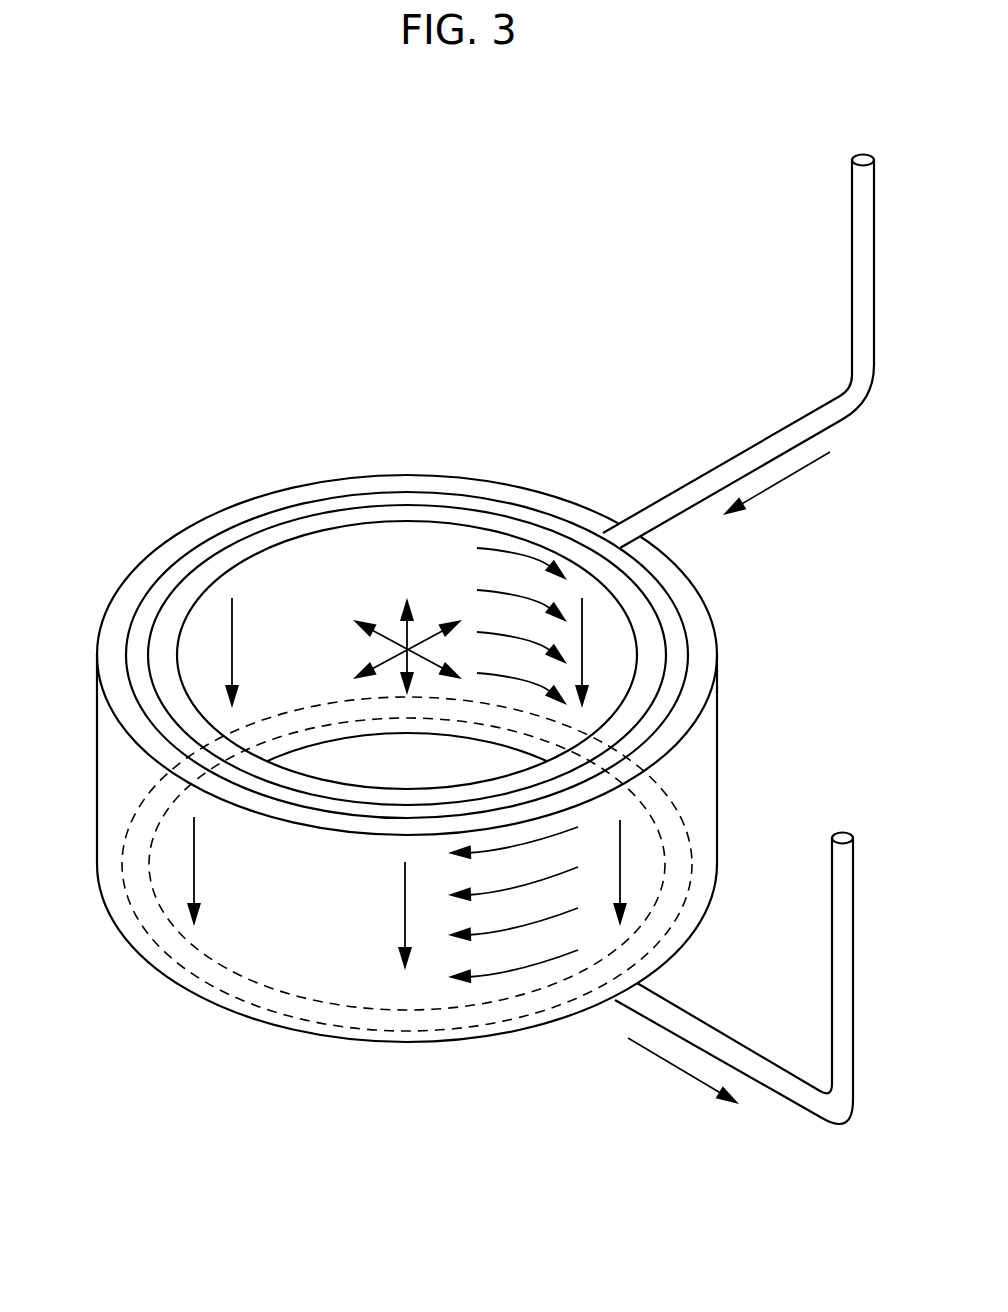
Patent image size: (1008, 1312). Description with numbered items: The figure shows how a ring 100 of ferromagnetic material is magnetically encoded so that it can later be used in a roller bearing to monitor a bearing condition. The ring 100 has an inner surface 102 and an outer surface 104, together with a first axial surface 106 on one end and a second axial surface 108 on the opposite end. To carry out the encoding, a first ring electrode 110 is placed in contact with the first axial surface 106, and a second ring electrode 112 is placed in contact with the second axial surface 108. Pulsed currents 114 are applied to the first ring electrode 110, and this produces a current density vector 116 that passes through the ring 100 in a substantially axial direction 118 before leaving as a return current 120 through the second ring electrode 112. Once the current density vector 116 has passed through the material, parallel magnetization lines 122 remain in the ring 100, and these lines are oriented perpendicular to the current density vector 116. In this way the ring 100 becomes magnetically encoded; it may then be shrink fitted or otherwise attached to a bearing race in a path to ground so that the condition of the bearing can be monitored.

The ring 100 is at (183, 326).
The inner surface 102 is at (205, 660).
The outer surface 104 is at (700, 770).
The first axial surface 106 is at (186, 538).
The second axial surface 108 is at (150, 965).
The first ring electrode 110 is at (680, 650).
The second ring electrode 112 is at (312, 1013).
The pulsed currents 114 is at (782, 487).
The current density vector 116 is at (234, 657).
The axial direction 118 is at (400, 633).
The return current 120 is at (672, 1065).
The parallel magnetization lines 122 is at (520, 596).